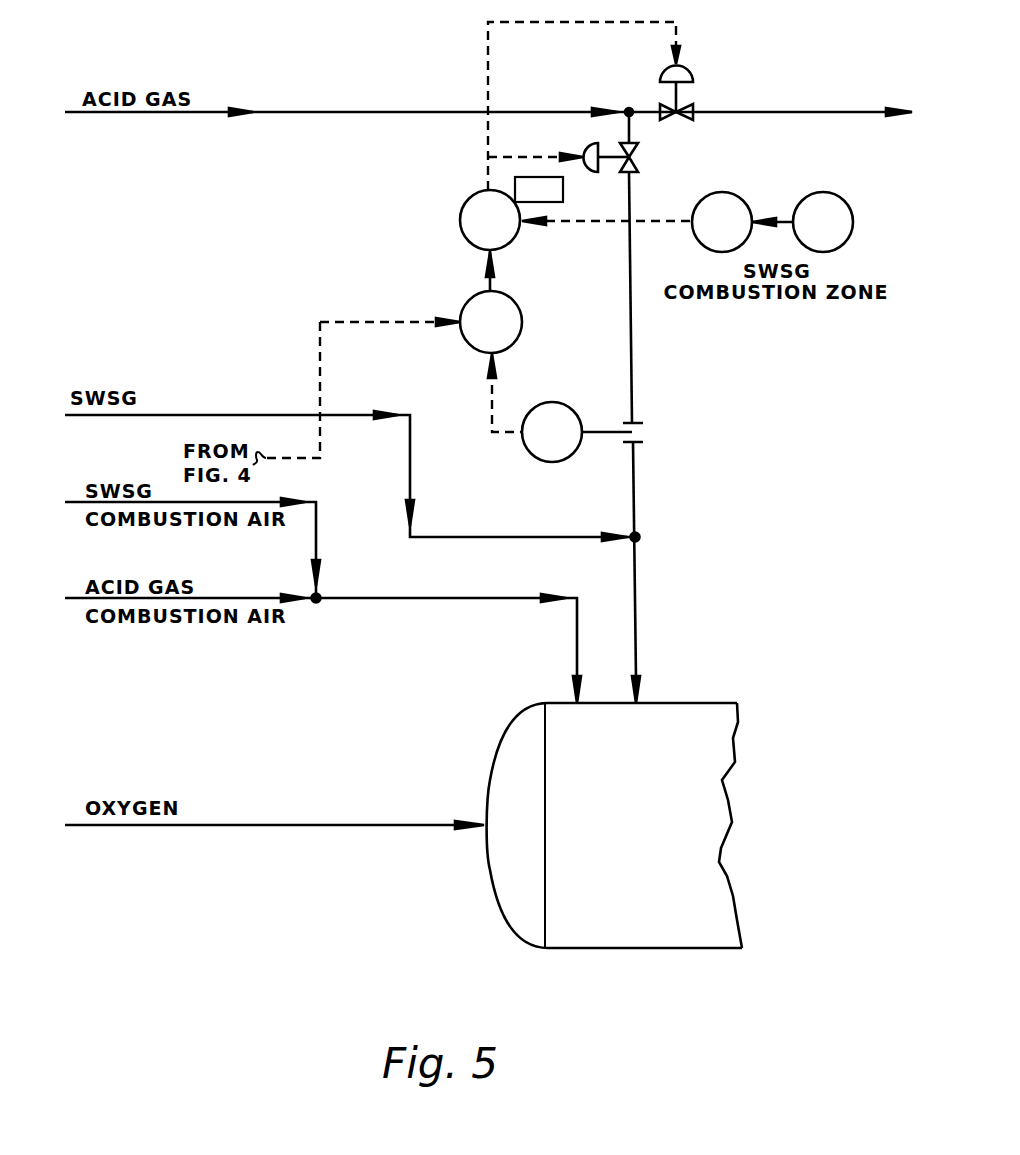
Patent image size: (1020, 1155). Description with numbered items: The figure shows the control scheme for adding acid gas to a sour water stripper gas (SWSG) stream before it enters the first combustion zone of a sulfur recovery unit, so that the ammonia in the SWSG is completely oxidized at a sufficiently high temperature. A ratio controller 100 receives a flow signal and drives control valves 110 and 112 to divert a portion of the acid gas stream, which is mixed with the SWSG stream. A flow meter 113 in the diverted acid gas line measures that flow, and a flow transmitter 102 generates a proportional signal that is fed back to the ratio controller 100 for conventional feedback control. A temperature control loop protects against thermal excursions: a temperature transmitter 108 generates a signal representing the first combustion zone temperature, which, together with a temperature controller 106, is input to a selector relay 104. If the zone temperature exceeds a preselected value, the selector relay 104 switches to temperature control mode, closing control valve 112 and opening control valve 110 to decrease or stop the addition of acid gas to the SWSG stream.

The ratio controller 100 is at (470, 298).
The flow transmitter 102 is at (532, 456).
The selector relay 104 is at (468, 197).
The temperature controller TC 106 is at (722, 192).
The temperature transmitter 108 is at (815, 192).
The control valve 110 is at (680, 66).
The control valve 112 is at (640, 158).
The flow meter 113 is at (640, 444).